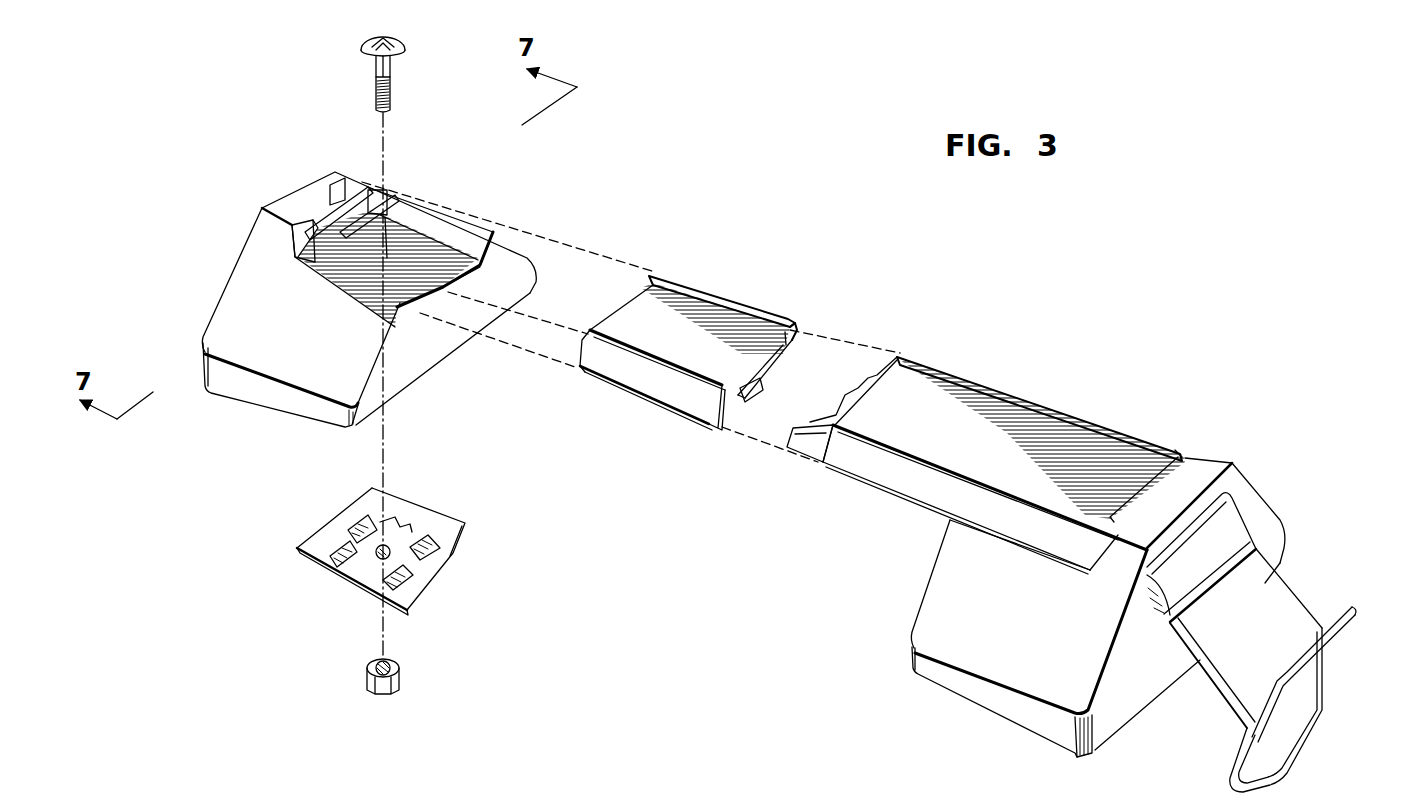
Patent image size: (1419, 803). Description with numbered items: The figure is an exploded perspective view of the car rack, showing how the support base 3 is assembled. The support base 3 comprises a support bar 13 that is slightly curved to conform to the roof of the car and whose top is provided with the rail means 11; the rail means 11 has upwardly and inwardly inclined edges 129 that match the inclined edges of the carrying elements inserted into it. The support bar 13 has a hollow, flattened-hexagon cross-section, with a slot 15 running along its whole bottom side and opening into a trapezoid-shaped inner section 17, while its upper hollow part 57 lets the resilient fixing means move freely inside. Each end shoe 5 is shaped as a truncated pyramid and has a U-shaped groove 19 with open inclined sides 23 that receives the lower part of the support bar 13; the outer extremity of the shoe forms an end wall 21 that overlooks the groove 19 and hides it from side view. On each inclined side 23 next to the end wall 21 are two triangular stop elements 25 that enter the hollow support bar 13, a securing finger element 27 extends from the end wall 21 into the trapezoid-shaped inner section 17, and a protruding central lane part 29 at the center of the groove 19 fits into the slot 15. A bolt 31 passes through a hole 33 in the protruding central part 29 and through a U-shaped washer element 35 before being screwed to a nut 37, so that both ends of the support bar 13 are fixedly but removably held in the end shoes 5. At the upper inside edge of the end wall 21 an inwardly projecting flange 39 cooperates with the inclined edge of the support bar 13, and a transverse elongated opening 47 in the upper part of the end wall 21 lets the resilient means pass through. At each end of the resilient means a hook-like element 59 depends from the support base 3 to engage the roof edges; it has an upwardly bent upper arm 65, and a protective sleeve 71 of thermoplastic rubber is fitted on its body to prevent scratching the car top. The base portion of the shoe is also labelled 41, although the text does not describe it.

The support base 3 is at (702, 268).
The end shoe 5 is at (731, 448).
The rail means 11 is at (727, 353).
The support bar 13 is at (940, 402).
The slot 15 is at (764, 388).
The trapezoid shaped inner section 17 is at (770, 372).
The groove 19 is at (462, 255).
The end wall 21 is at (265, 228).
The inclined side 23 is at (447, 227).
The triangular stop element 25 is at (292, 238).
The securing finger element 27 is at (333, 210).
The protruding central lane part 29 is at (478, 270).
The bolt 31 is at (403, 44).
The hole 33 is at (390, 258).
The U shaped washer element 35 is at (430, 522).
The nut 37 is at (401, 668).
The inwardly projecting flange 39 is at (328, 205).
The base 41 is at (255, 402).
The transverse elongated opening 47 is at (297, 238).
The upper hollow part 57 is at (790, 342).
The hook-like element 59 is at (1333, 709).
The upper arm 65 is at (1356, 612).
The protective sleeve 71 is at (1287, 600).
The inclined edge 129 is at (762, 282).